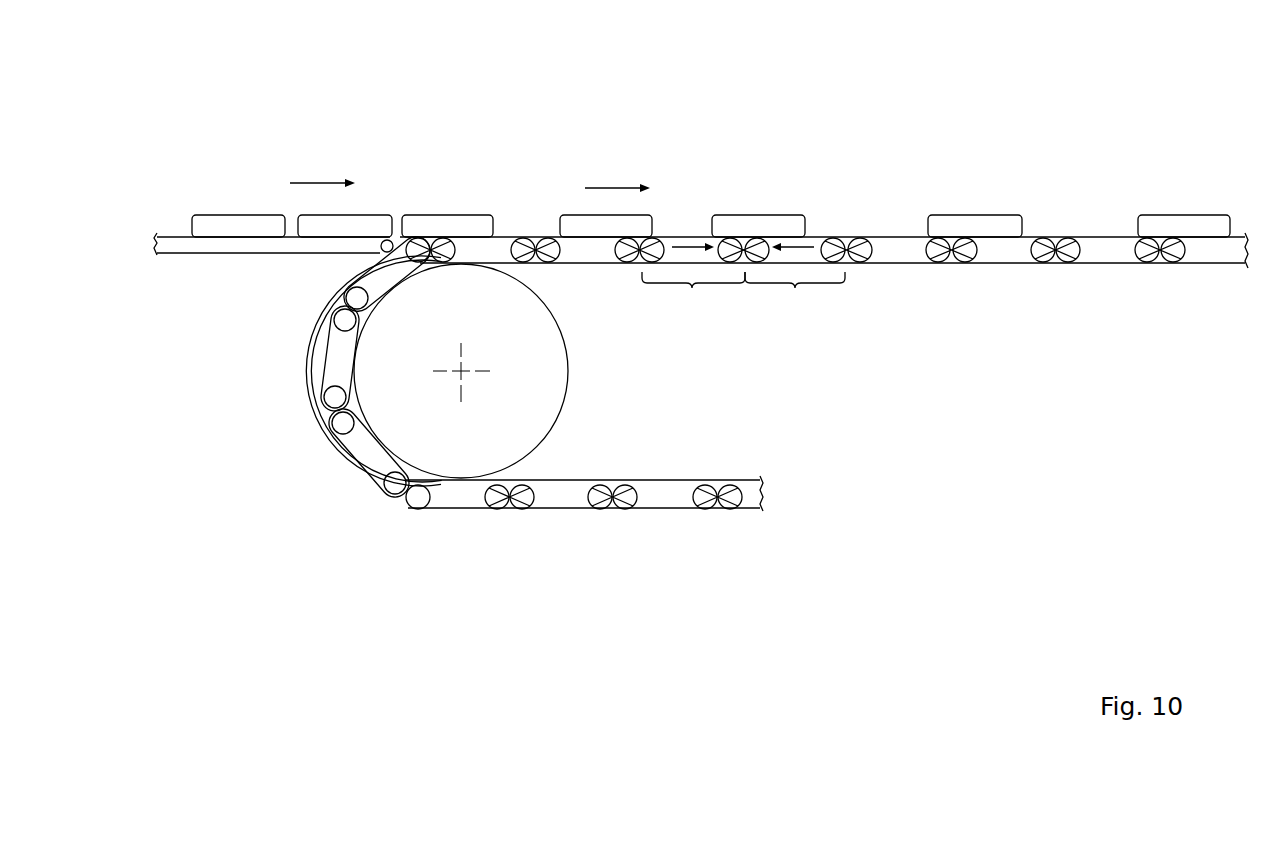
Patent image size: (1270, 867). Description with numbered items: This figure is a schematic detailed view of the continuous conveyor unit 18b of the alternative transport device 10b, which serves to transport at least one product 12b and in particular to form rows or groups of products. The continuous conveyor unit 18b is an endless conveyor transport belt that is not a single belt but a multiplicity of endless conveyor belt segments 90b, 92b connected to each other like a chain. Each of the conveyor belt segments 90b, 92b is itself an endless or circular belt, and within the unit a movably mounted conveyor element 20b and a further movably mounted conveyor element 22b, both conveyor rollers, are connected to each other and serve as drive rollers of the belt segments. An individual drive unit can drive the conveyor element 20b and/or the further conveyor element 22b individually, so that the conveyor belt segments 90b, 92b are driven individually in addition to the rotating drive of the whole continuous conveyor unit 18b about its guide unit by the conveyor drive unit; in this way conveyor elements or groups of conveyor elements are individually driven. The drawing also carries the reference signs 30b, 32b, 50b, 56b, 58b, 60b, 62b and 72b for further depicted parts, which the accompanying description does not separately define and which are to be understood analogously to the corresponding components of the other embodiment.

The transport device 10b is at (497, 525).
The product 12b is at (449, 236).
The continuous conveyor unit 18b is at (312, 418).
The conveyor element 20b is at (743, 299).
The further conveyor element 22b is at (757, 263).
The first zone 30b is at (692, 290).
The second zone 32b is at (795, 290).
The products 50b is at (318, 183).
The first roller 56b is at (737, 240).
The second roller 58b is at (747, 245).
The conveyor system 60b is at (235, 128).
The infeed conveyor 62b is at (160, 297).
The drum 72b is at (517, 436).
The conveyor belt segment 90b is at (685, 235).
The conveyor belt segment 92b is at (815, 237).